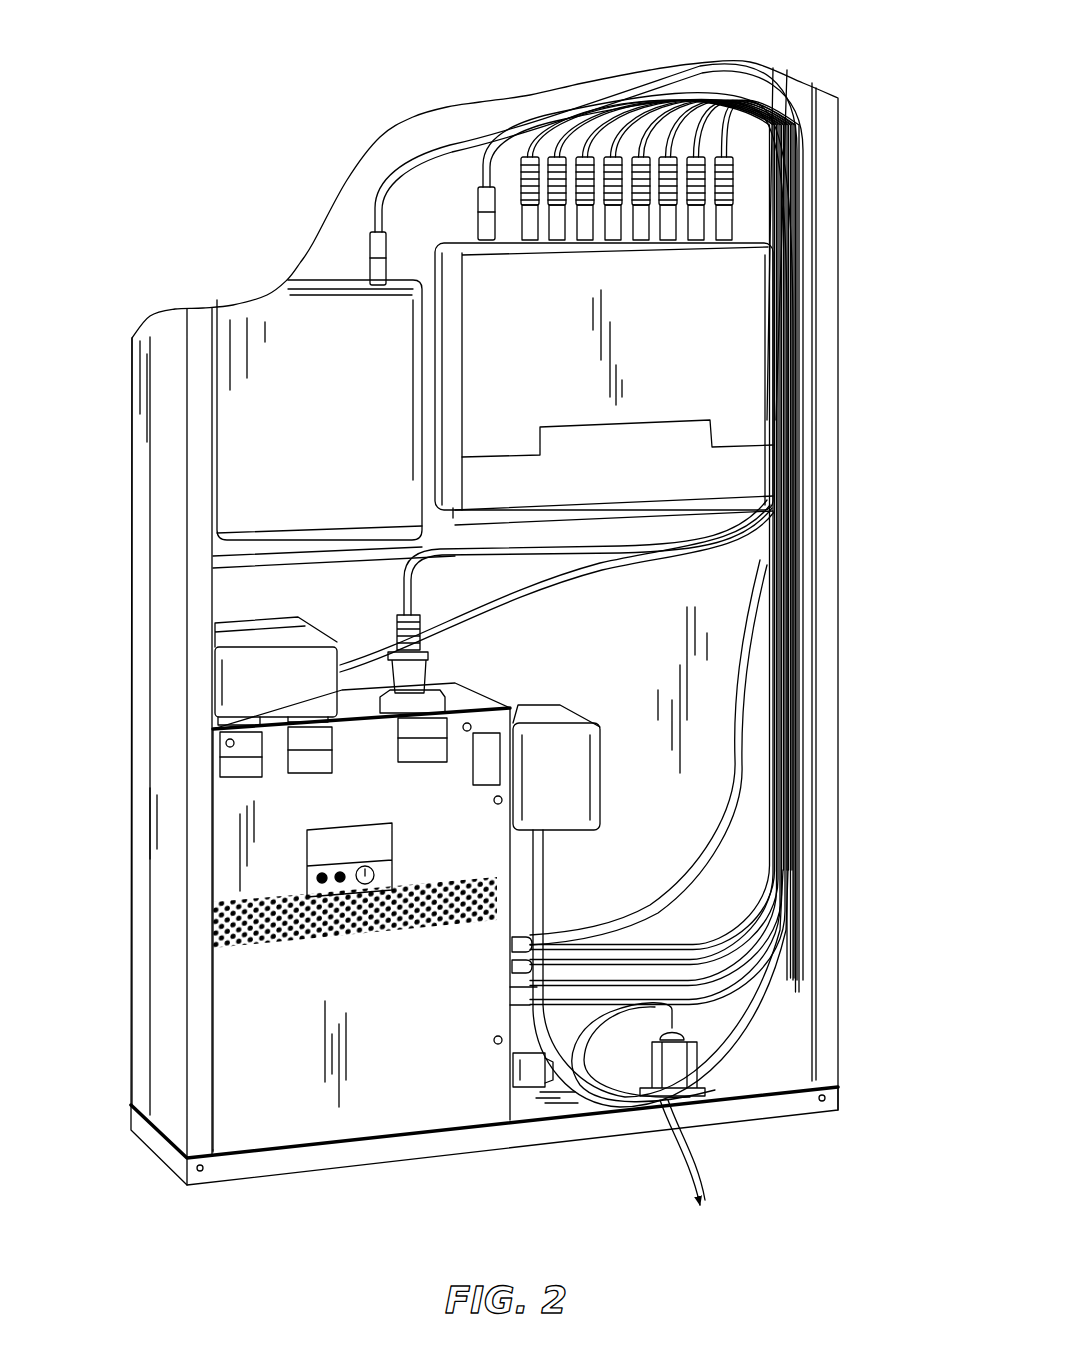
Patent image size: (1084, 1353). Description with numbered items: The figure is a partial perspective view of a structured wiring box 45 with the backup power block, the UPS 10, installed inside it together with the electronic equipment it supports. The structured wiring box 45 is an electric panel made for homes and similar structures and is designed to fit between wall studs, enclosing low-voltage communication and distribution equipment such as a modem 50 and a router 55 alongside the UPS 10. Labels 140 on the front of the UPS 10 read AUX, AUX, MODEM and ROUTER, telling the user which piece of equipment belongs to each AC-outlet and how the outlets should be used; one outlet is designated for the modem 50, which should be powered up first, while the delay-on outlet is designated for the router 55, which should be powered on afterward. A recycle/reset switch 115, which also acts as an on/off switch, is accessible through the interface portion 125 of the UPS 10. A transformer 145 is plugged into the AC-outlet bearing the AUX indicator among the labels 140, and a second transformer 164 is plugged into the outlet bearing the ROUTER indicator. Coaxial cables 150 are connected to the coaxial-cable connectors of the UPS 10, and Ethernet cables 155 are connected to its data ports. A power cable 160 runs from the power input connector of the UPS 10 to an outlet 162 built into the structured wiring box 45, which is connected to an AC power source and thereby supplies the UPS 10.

The UPS 10 is at (287, 1118).
The structured wiring box 45 is at (844, 47).
The modem 50 is at (273, 453).
The router 55 is at (720, 352).
The recycle/reset switch 115 is at (366, 866).
The interface portion 125 is at (298, 858).
The labels 140 is at (468, 763).
The transformer 145 is at (270, 678).
The coaxial cables 150 is at (672, 942).
The Ethernet cables 155 is at (580, 985).
The power cable 160 is at (516, 1072).
The outlet 162 is at (680, 1083).
The second transformer 164 is at (578, 790).